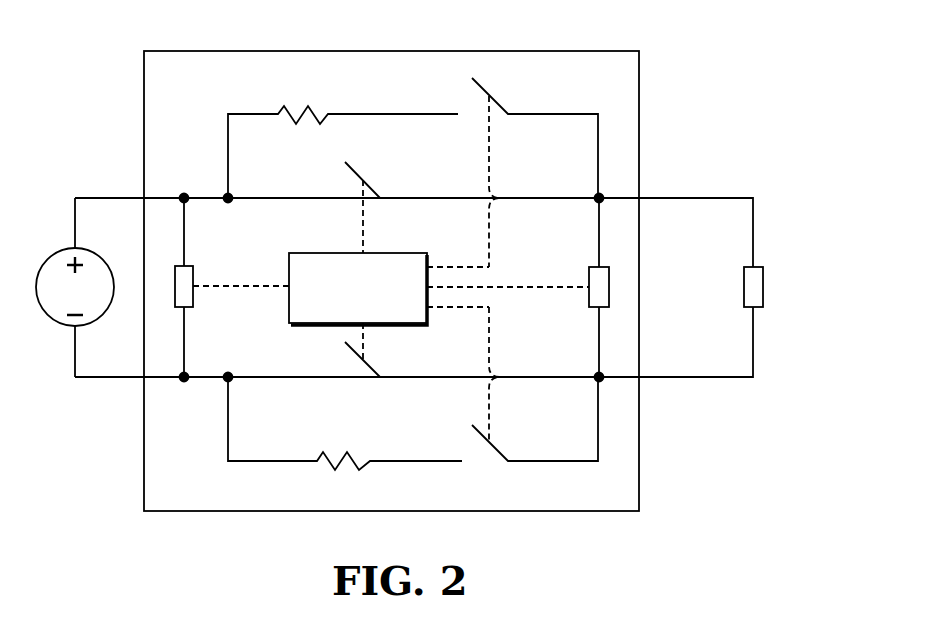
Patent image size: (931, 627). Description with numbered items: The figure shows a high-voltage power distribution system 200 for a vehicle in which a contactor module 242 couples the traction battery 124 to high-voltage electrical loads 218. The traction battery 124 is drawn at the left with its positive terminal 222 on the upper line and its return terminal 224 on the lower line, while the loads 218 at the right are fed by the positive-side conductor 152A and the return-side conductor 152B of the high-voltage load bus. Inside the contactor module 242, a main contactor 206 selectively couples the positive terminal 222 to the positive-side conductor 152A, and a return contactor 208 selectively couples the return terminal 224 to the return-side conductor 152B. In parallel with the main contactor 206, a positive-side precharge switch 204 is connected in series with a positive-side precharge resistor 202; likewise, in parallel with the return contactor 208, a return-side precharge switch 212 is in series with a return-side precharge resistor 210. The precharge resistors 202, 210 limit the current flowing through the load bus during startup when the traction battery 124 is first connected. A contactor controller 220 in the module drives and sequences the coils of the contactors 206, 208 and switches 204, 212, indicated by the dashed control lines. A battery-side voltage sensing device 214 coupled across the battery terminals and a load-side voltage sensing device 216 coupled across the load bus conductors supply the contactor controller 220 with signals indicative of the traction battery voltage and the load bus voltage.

The high-voltage power distribution system 200 is at (684, 40).
The contactor module 242 is at (392, 51).
The traction battery 124 is at (50, 260).
The positive terminal 222 is at (115, 198).
The return terminal 224 is at (115, 377).
The battery-side voltage sensing device 214 is at (193, 278).
The positive-side precharge resistor 202 is at (317, 107).
The positive-side precharge switch 204 is at (497, 103).
The main contactor 206 is at (370, 187).
The return contactor 208 is at (370, 365).
The return-side precharge resistor 210 is at (357, 455).
The return-side precharge switch 212 is at (500, 447).
The contactor controller 220 is at (343, 253).
The load-side voltage sensing device 216 is at (589, 277).
The high-voltage electrical loads 218 is at (744, 277).
The positive-side conductor 152A is at (696, 198).
The return-side conductor 152B is at (696, 377).